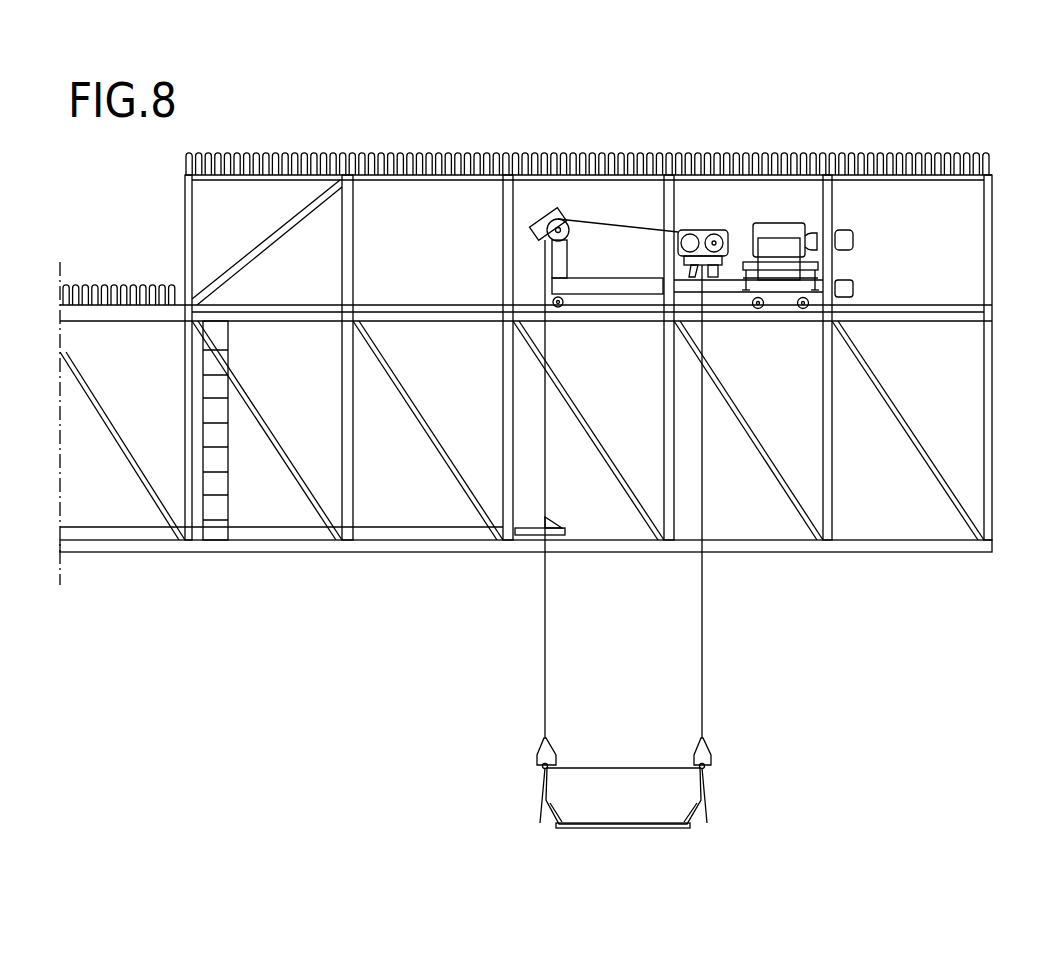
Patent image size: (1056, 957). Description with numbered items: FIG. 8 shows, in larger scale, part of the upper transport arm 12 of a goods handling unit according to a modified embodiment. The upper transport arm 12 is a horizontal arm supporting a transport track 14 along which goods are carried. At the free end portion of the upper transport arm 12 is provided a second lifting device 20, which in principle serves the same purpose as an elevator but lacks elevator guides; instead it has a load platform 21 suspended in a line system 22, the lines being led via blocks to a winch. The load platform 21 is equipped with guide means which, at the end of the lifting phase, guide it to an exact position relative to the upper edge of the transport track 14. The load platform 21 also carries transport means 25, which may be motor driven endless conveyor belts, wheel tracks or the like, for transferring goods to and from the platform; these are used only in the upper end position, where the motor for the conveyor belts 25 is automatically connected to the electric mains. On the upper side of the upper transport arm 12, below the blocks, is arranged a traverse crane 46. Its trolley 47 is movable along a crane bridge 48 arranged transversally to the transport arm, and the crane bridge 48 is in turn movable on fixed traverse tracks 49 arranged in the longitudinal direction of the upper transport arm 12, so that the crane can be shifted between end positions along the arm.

The upper transport arm 12 is at (995, 147).
The transport track 14 is at (387, 532).
The second lifting device 20 is at (700, 226).
The load platform 21 is at (655, 820).
The line system 22 is at (545, 620).
The transport means 25 is at (599, 822).
The traverse crane 46 is at (788, 222).
The trolley 47 is at (812, 251).
The crane bridge 48 is at (603, 286).
The traverse tracks 49 is at (421, 307).